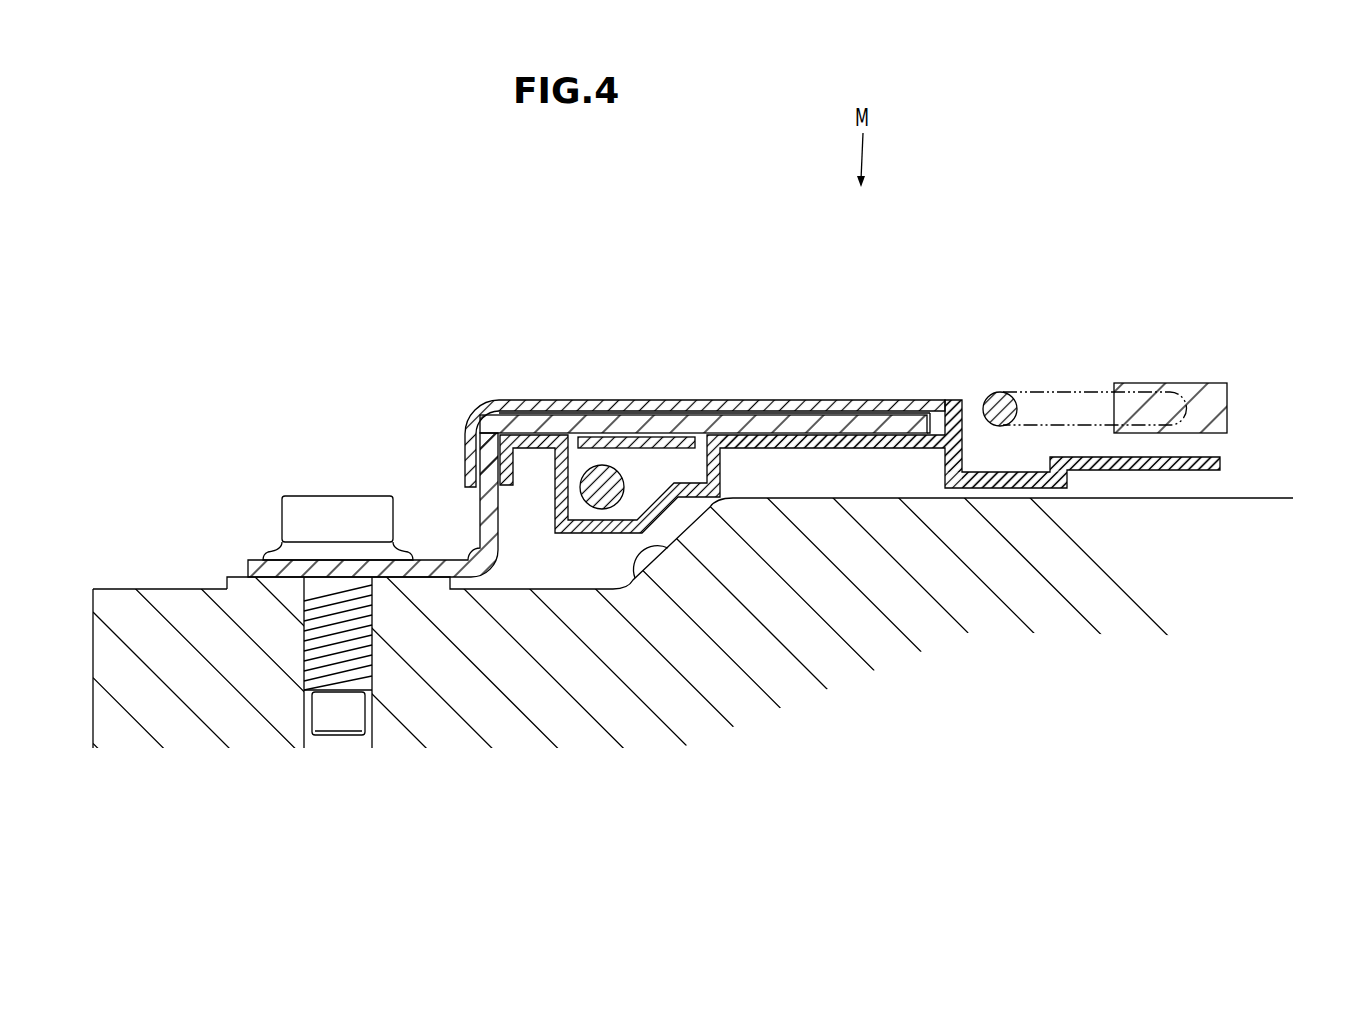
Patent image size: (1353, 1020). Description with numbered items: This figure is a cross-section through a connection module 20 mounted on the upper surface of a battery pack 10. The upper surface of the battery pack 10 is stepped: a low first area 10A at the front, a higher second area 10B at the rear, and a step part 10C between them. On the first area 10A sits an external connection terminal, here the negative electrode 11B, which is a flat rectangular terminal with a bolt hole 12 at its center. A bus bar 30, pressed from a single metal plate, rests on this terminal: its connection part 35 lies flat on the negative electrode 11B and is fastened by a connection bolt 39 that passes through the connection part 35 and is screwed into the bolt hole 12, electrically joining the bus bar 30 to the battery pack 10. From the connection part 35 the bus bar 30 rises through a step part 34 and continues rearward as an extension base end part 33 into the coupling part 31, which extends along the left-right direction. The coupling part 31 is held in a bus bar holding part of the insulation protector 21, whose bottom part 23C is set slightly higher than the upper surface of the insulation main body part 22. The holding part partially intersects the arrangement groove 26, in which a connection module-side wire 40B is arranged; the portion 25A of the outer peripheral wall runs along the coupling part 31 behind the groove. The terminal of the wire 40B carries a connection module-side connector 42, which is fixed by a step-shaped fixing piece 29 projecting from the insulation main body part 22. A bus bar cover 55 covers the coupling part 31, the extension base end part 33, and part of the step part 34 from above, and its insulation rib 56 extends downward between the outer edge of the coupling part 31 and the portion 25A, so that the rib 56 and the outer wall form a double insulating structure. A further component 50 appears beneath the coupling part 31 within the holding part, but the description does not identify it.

The battery pack 10 is at (126, 600).
The first area 10A is at (167, 587).
The second area 10B is at (1255, 498).
The step part 10C is at (657, 545).
The negative electrode 11B is at (240, 577).
The bolt hole 12 is at (314, 630).
The connection module 20 is at (899, 358).
The insulation protector 21 is at (877, 466).
The insulation main body part 22 is at (1022, 487).
The bottom part 23C is at (783, 450).
The portion of outer peripheral wall 25A is at (963, 413).
The arrangement groove 26 is at (580, 530).
The fixing piece 29 is at (1153, 470).
The bus bar 30 is at (703, 424).
The coupling part 31 is at (733, 425).
The extension base end part 33 is at (525, 402).
The step part 34 is at (487, 478).
The connection part 35 is at (440, 568).
The connection bolt 39 is at (322, 507).
The connection module-side wire 40B is at (603, 485).
The connection module-side connector 42 is at (1210, 392).
The electronic component 50 is at (627, 443).
The bus bar cover 55 is at (858, 413).
The insulation rib 56 is at (930, 417).